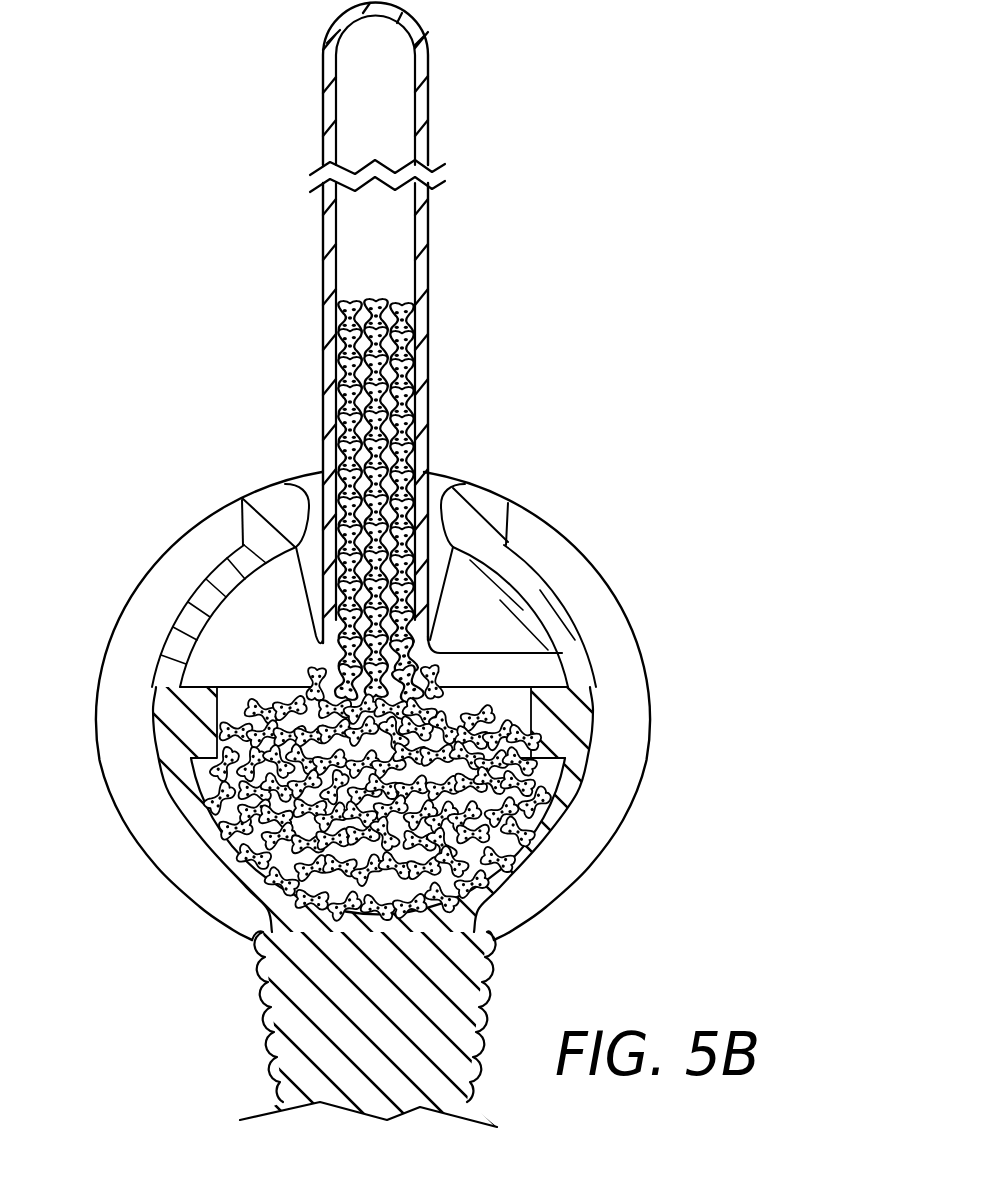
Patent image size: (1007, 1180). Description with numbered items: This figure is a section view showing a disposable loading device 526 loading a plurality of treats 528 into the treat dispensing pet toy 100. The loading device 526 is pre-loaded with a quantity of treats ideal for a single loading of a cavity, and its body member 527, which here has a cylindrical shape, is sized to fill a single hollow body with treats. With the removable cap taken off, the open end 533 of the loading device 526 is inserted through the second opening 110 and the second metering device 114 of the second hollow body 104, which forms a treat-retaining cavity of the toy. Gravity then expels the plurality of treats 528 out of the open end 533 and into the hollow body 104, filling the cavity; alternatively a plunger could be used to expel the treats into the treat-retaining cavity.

The treat dispensing pet toy 100 is at (655, 493).
The second hollow body 104 is at (98, 715).
The second opening 110 is at (428, 473).
The second metering device 114 is at (300, 492).
The disposable loading device 526 is at (322, 305).
The body member 527 is at (422, 358).
The plurality of treats 528 is at (374, 421).
The open end 533 is at (545, 653).